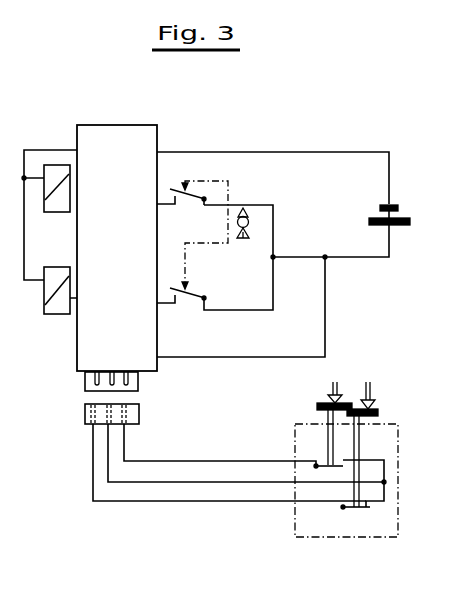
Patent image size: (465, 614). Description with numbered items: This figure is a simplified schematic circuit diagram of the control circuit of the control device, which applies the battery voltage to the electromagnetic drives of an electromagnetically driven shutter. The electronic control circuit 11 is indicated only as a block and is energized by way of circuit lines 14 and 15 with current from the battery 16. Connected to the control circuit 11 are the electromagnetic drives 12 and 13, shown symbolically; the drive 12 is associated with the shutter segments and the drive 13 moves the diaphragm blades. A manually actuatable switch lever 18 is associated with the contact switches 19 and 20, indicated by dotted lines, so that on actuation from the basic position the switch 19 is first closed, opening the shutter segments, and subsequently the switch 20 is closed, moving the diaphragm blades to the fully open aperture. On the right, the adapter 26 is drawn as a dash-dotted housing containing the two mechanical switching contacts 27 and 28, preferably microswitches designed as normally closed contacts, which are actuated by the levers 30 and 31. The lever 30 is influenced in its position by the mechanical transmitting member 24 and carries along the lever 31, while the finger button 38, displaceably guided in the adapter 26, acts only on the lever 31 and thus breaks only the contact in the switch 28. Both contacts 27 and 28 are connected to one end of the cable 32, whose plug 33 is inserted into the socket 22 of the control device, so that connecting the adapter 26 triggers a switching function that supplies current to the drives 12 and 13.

The electronic control circuit 11 is at (124, 163).
The electromagnetic drive 12 is at (57, 180).
The electromagnetic drive 13 is at (53, 305).
The circuit line 14 is at (281, 152).
The circuit line 15 is at (228, 357).
The battery 16 is at (378, 215).
The switch lever 18 is at (243, 238).
The contact switch 19 is at (191, 193).
The contact switch 20 is at (193, 300).
The socket 22 is at (138, 380).
The mechanical transmitting member 24 is at (339, 412).
The adapter 26 is at (377, 537).
The mechanical switching contact 27 is at (320, 463).
The mechanical switching contact 28 is at (352, 510).
The lever 30 is at (317, 405).
The lever 31 is at (378, 412).
The cable 32 is at (177, 492).
The plug 33 is at (139, 418).
The finger button 38 is at (368, 433).